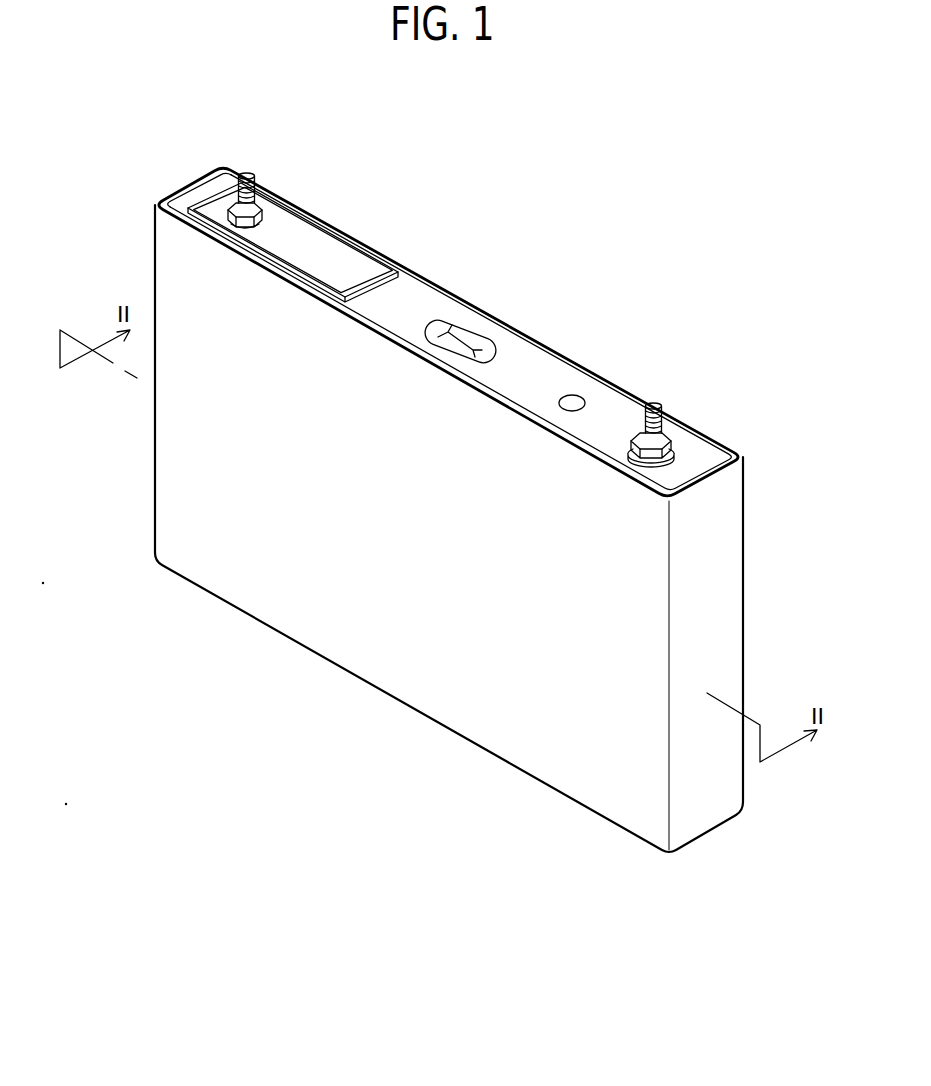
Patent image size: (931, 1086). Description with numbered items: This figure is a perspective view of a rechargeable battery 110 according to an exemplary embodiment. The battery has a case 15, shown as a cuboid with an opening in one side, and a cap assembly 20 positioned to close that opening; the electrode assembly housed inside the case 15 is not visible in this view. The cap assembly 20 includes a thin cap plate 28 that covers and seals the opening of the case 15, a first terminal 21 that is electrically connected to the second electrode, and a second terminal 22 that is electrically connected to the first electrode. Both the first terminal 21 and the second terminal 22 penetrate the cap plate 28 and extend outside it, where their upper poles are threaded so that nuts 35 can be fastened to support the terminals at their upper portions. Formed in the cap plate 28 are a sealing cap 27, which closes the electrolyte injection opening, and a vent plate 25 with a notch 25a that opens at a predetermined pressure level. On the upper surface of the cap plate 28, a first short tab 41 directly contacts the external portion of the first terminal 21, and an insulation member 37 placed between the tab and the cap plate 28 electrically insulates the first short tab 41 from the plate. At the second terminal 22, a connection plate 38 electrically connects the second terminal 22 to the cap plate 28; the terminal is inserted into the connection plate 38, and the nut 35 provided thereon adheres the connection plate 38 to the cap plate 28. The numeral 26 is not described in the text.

The rechargeable battery 110 is at (563, 310).
The case 15 is at (389, 666).
The cap assembly 20 is at (407, 272).
The first terminal 21 is at (246, 176).
The second terminal 22 is at (653, 406).
The vent plate 25 is at (450, 322).
The notch 25a is at (470, 340).
The nut 26 is at (668, 428).
The sealing cap 27 is at (573, 396).
The cap plate 28 is at (425, 295).
The nut 35 is at (212, 207).
The insulation member 37 is at (337, 238).
The connection plate 38 is at (690, 457).
The first short tab 41 is at (283, 227).